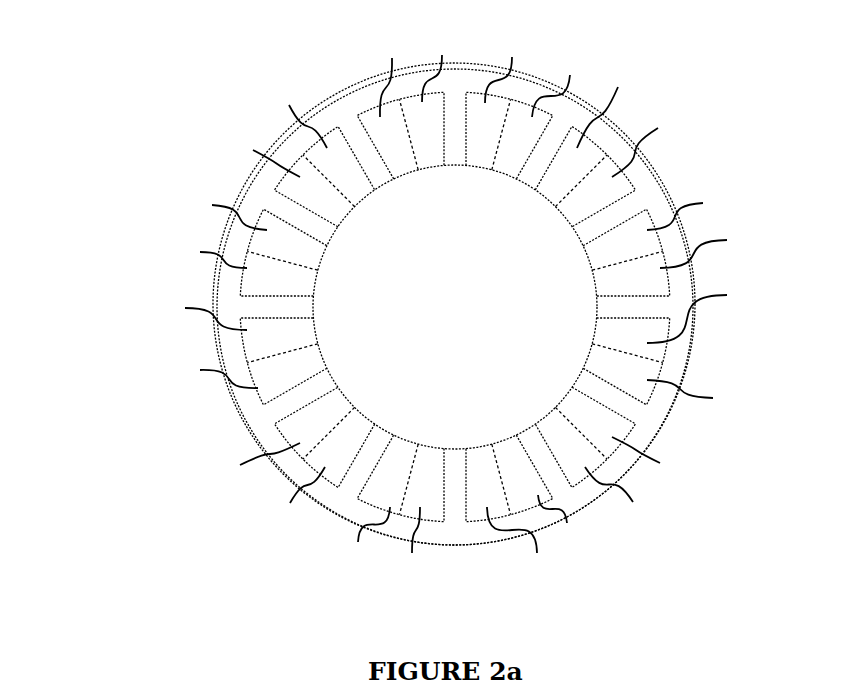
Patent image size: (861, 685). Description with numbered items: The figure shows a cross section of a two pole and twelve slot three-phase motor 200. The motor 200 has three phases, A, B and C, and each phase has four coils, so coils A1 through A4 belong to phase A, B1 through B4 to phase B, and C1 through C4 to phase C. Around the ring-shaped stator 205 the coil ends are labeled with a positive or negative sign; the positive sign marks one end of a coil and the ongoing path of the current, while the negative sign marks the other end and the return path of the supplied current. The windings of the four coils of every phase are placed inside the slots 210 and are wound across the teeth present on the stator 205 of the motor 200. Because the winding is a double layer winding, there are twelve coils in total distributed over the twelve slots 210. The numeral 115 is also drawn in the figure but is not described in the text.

The motor 200 is at (427, 303).
The stator 115 is at (445, 215).
The stator 205 is at (672, 193).
The slots 210 is at (672, 362).